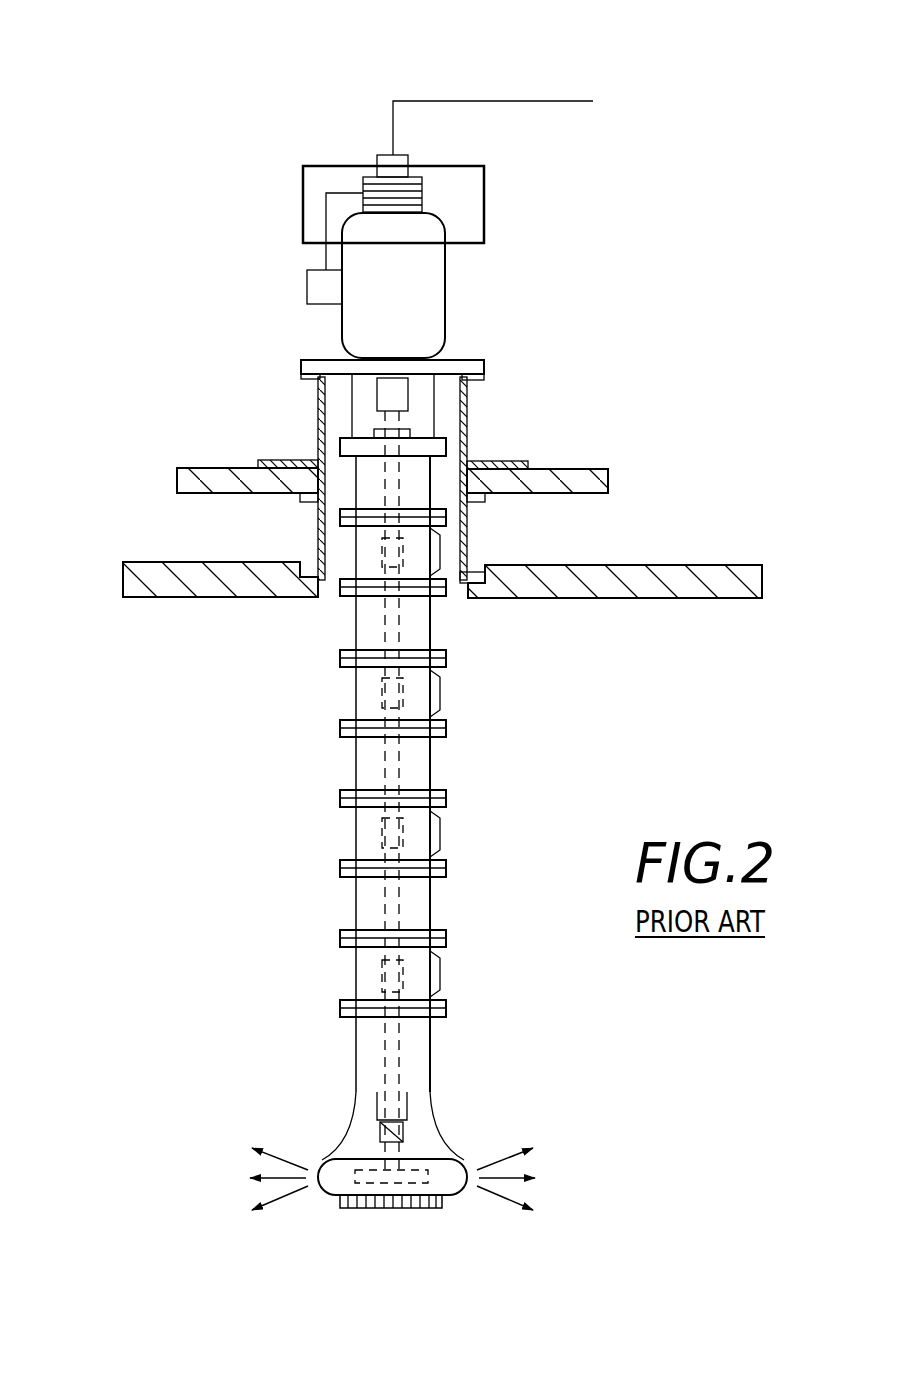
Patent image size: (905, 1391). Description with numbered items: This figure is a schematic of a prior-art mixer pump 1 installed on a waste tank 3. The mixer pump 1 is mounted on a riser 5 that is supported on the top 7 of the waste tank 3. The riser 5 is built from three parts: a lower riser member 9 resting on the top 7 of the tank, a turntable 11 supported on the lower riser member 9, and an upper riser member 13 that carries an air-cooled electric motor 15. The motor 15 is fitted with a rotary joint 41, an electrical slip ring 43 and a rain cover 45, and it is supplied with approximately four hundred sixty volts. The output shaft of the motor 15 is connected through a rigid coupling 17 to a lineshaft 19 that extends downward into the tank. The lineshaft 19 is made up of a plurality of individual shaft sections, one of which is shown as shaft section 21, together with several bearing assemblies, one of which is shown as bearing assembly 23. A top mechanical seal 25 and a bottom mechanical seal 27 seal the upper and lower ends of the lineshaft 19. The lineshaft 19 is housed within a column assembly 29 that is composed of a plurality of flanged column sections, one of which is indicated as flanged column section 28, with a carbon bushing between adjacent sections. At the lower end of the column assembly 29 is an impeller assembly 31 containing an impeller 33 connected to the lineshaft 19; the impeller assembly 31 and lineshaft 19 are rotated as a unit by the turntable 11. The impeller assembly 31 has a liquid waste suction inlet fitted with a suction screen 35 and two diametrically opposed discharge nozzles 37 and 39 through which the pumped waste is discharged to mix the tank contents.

The mixer pump 1 is at (493, 77).
The waste tank 3 is at (768, 509).
The riser 5 is at (448, 472).
The top of waste tank 7 is at (600, 565).
The lower riser member 9 is at (468, 547).
The turntable 11 is at (608, 483).
The upper riser member 13 is at (485, 388).
The air-cooled electric motor 15 is at (363, 313).
The rigid coupling 17 is at (382, 395).
The lineshaft 19 is at (385, 613).
The shaft section 21 is at (383, 900).
The bearing assembly 23 is at (393, 972).
The top mechanical seal 25 is at (440, 433).
The bottom mechanical seal 27 is at (403, 1133).
The flanged column section 28 is at (432, 770).
The column assembly 29 is at (328, 763).
The impeller assembly 31 is at (268, 1271).
The impeller 33 is at (392, 1213).
The suction screen 35 is at (432, 1212).
The discharge nozzle 37 is at (467, 1183).
The discharge nozzle 39 is at (330, 1170).
The rotary joint 41 is at (390, 155).
The electrical slip ring 43 is at (377, 178).
The rain cover 45 is at (485, 225).